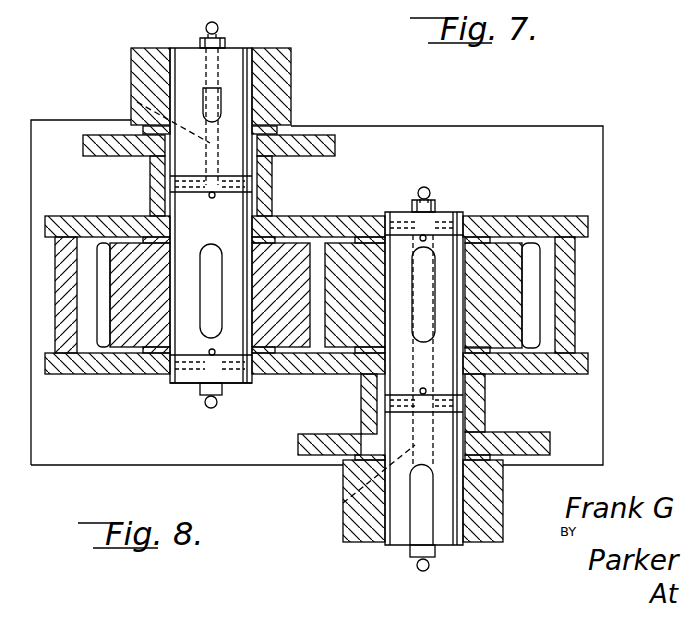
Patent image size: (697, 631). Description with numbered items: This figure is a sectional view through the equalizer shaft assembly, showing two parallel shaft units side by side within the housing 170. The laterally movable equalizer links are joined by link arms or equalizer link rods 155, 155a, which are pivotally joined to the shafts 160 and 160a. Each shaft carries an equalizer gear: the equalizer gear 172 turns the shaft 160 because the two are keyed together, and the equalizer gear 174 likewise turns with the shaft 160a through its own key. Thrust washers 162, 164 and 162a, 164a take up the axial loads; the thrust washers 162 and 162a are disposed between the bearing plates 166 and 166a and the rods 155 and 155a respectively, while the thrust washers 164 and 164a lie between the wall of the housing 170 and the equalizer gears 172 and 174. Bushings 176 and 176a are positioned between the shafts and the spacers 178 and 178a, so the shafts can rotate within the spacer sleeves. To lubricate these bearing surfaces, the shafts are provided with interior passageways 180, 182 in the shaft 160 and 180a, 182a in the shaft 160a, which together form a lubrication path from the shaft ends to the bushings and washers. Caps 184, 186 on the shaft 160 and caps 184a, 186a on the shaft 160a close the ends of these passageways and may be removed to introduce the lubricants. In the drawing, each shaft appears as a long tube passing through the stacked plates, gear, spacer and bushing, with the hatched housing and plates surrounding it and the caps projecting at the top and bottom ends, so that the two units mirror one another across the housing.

The equalizer link rod 155 is at (345, 536).
The equalizer link rod 155a is at (287, 92).
The shaft 160 is at (450, 530).
The shaft 160a is at (246, 48).
The thrust washer 162 is at (495, 470).
The thrust washer 162a is at (290, 126).
The thrust washer 164 is at (480, 240).
The thrust washer 164a is at (155, 350).
The bearing plate 166 is at (553, 445).
The bearing plate 166a is at (335, 143).
The housing 170 is at (578, 370).
The equalizer gear 172 is at (545, 295).
The equalizer gear 174 is at (136, 325).
The bushing 176 is at (376, 380).
The bushing 176a is at (165, 200).
The spacer 178 is at (376, 418).
The spacer 178a is at (150, 176).
The interior passageway 180 is at (340, 502).
The interior passageway 180a is at (133, 100).
The interior passageway 182 is at (400, 222).
The interior passageway 182a is at (185, 385).
The cap 184 is at (428, 190).
The cap 184a is at (210, 22).
The cap 186 is at (418, 571).
The cap 186a is at (214, 408).